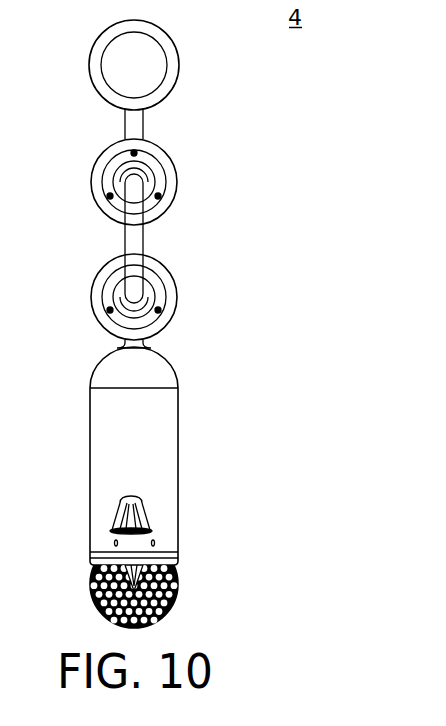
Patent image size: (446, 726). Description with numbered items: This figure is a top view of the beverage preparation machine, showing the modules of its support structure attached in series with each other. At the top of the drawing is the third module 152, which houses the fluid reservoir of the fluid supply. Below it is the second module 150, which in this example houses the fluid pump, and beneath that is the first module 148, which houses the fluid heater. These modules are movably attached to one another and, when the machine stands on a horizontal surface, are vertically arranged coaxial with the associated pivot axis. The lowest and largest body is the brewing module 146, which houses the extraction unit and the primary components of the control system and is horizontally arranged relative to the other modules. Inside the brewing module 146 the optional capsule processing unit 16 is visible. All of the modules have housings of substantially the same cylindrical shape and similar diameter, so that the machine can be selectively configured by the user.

The third module 152 is at (180, 67).
The second module 150 is at (178, 181).
The first module 148 is at (177, 297).
The brewing module 146 is at (178, 453).
The capsule processing unit 16 is at (160, 538).